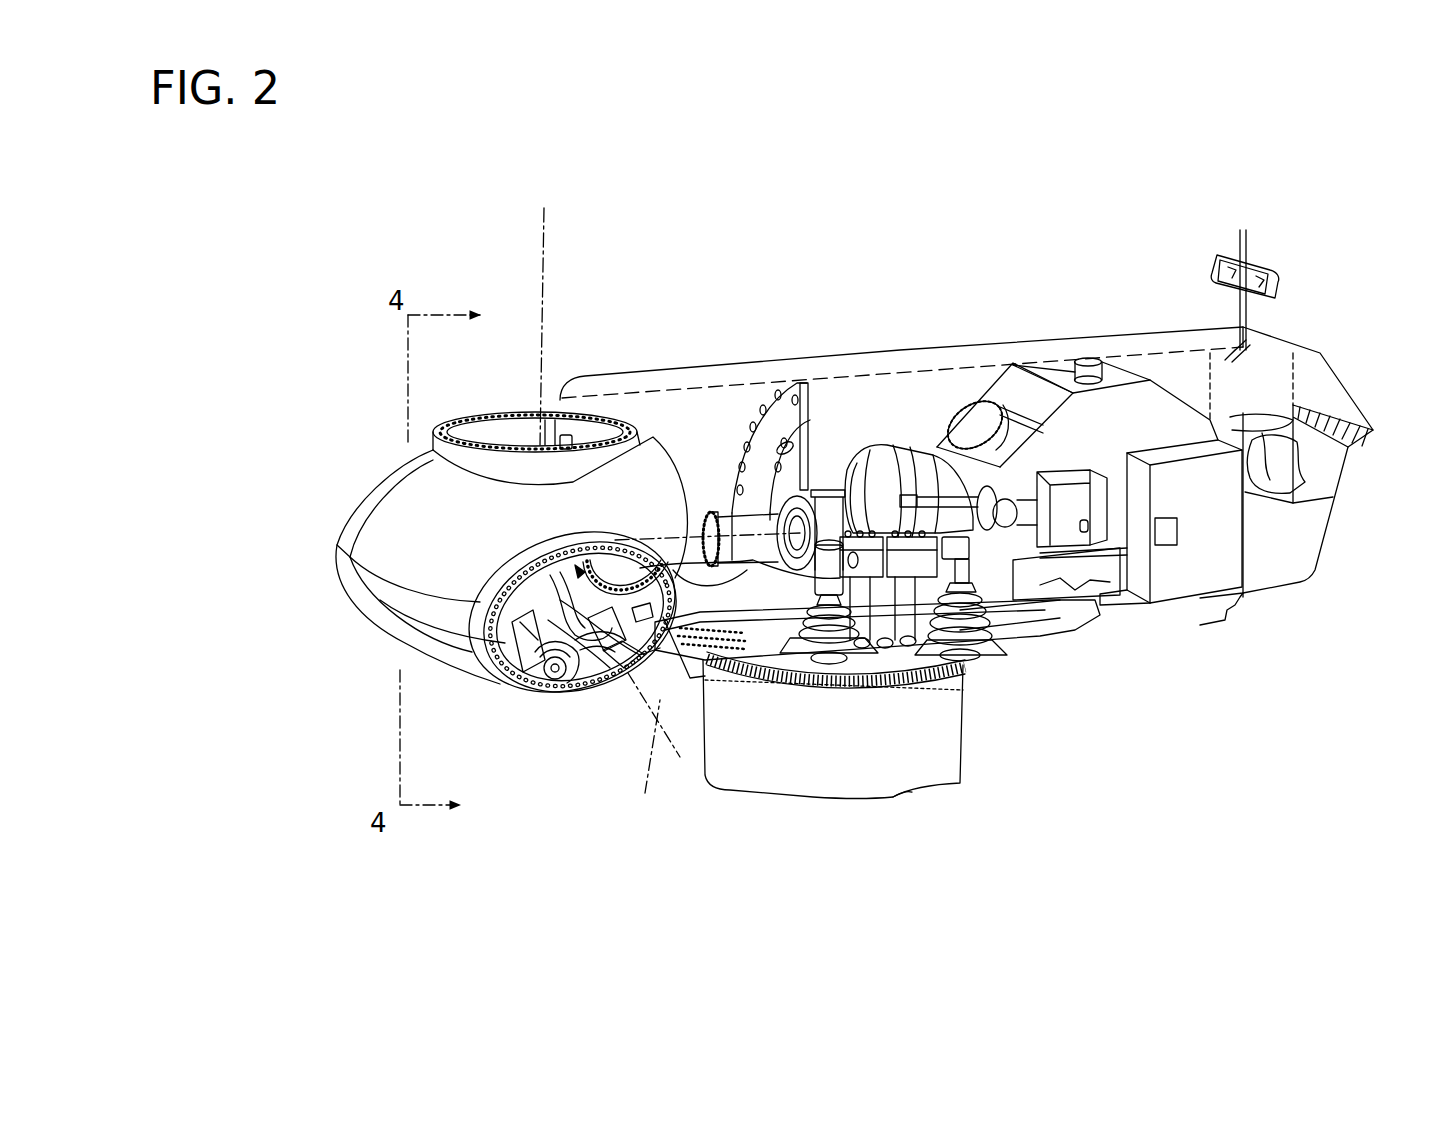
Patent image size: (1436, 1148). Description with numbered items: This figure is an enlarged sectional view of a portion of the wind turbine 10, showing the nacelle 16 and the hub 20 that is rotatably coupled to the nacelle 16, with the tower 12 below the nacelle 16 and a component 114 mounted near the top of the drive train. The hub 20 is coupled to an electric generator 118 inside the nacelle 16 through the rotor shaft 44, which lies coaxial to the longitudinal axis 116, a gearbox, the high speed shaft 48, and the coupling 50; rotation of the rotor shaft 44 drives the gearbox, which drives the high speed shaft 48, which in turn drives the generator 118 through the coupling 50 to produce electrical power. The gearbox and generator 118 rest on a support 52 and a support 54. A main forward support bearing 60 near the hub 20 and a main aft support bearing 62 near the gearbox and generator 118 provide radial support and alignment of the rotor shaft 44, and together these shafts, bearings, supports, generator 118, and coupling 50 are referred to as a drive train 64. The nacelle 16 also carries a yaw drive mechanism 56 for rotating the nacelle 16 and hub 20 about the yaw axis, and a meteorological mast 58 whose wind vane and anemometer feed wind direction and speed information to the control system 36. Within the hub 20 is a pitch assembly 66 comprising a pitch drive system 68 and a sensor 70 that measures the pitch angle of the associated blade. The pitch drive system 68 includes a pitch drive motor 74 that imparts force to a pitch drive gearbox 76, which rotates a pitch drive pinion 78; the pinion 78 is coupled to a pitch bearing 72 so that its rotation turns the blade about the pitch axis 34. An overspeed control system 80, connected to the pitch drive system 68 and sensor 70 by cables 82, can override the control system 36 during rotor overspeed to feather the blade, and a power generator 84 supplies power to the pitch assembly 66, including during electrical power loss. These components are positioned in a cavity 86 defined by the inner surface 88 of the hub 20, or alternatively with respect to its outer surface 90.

The wind turbine 10 is at (1277, 185).
The tower 12 is at (887, 795).
The nacelle 16 is at (940, 292).
The hub 20 is at (328, 545).
The pitch axis 34 is at (548, 232).
The control system 36 is at (1178, 482).
The rotor shaft 44 is at (722, 517).
The high speed shaft 48 is at (1013, 560).
The coupling 50 is at (990, 472).
The support 52 is at (933, 665).
The support 54 is at (1012, 565).
The yaw drive mechanism 56 is at (827, 647).
The meteorological mast 58 is at (1283, 268).
The main forward support bearing 60 is at (712, 580).
The main aft support bearing 62 is at (887, 480).
The drive train 64 is at (768, 440).
The pitch assembly 66 is at (530, 540).
The pitch drive system 68 is at (507, 643).
The sensor 70 is at (637, 640).
The pitch bearing 72 is at (500, 688).
The pitch drive motor 74 is at (528, 595).
The pitch drive gearbox 76 is at (560, 606).
The pitch drive pinion 78 is at (547, 680).
The overspeed control system 80 is at (600, 677).
The cables 82 is at (637, 568).
The power generator 84 is at (628, 673).
The cavity 86 is at (573, 673).
The inner surface 88 is at (612, 560).
The outer surface 90 is at (472, 622).
The oil cooling system 114 is at (935, 465).
The longitudinal axis 116 is at (762, 514).
The electric generator 118 is at (1065, 560).